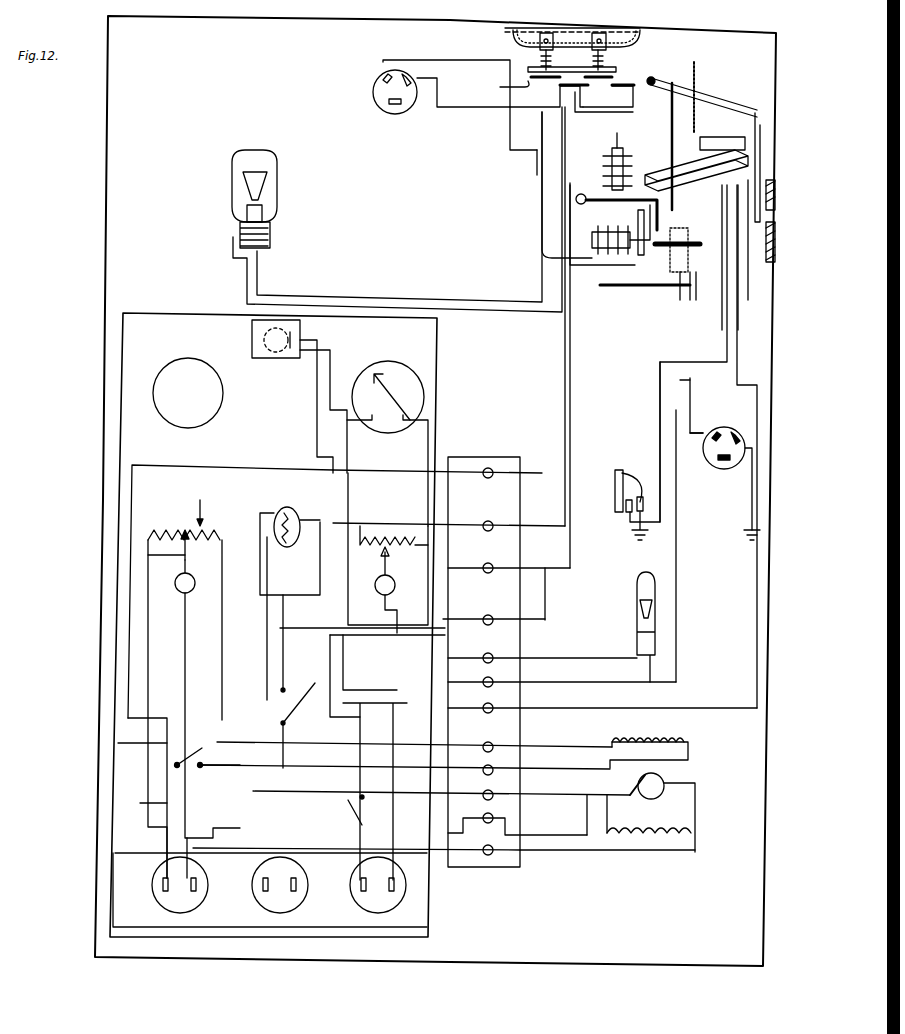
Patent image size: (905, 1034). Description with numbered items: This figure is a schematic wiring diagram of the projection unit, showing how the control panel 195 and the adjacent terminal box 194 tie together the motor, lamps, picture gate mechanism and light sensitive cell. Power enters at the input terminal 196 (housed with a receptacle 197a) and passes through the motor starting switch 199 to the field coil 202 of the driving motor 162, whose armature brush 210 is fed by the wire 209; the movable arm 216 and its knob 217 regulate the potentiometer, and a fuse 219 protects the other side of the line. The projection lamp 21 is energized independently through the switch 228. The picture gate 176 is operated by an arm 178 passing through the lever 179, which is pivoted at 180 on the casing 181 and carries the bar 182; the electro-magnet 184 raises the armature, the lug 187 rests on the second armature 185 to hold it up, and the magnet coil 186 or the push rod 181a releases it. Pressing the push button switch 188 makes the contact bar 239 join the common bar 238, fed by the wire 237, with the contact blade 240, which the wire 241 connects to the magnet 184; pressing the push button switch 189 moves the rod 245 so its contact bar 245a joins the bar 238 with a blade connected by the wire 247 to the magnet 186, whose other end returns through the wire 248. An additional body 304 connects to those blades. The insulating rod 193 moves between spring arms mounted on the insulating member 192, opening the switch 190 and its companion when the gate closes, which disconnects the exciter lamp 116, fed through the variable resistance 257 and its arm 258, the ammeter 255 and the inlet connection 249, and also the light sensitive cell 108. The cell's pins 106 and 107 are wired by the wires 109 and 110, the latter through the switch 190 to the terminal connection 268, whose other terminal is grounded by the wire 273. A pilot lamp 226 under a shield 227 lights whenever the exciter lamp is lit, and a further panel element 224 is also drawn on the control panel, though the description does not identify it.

The projection lamp 21 is at (268, 150).
The additional body 304 is at (395, 114).
The push button switch 188 is at (546, 32).
The push button switch 189 is at (606, 40).
The bar 238 is at (553, 32).
The rod 245 is at (612, 70).
The contact bar 239 is at (548, 80).
The contact bar 245a is at (606, 80).
The contact blade 240 is at (500, 80).
The wire 241 is at (510, 130).
The wire 247 is at (537, 176).
The wire 237 is at (560, 277).
The pivot 180 is at (655, 79).
The lever 179 is at (708, 95).
The casing 181 is at (696, 78).
The bar 182 is at (670, 108).
The arm 178 is at (763, 118).
The insulating rod 193 is at (740, 137).
The insulating member 192 is at (664, 170).
The spring arm switch 190 is at (712, 180).
The electro-magnet 184 is at (617, 132).
The lug 187 is at (650, 212).
The magnet coil 186 is at (570, 254).
The wire 248 is at (590, 268).
The second armature 185 is at (646, 260).
The push rod 181a is at (688, 244).
The picture gate 176 is at (762, 262).
The light sensitive cell 108 is at (615, 483).
The pin 106 is at (650, 478).
The pin 107 is at (625, 514).
The wire 110 is at (660, 455).
The wire 109 is at (640, 530).
The terminal connection 268 is at (716, 470).
The wire 273 is at (748, 520).
The terminal box 194 is at (468, 457).
The control panel 195 is at (123, 434).
The dial 224 is at (170, 368).
The pilot lamp 226 is at (300, 333).
The shield 227 is at (272, 358).
The ammeter 255 is at (382, 372).
The movable arm 216 is at (148, 553).
The knob 217 is at (175, 583).
The fuse 219 is at (294, 512).
The variable resistance 257 is at (378, 540).
The arm 258 is at (380, 576).
The switch 228 is at (315, 683).
The motor starting switch 199 is at (118, 745).
The input terminal 196 is at (163, 890).
The receptacle 197a is at (278, 912).
The inlet connection 249 is at (386, 912).
The field coil 202 is at (665, 738).
The brush 210 is at (666, 793).
The wire 209 is at (664, 852).
The exciter lamp 116 is at (660, 608).
The driving motor 162 is at (718, 825).